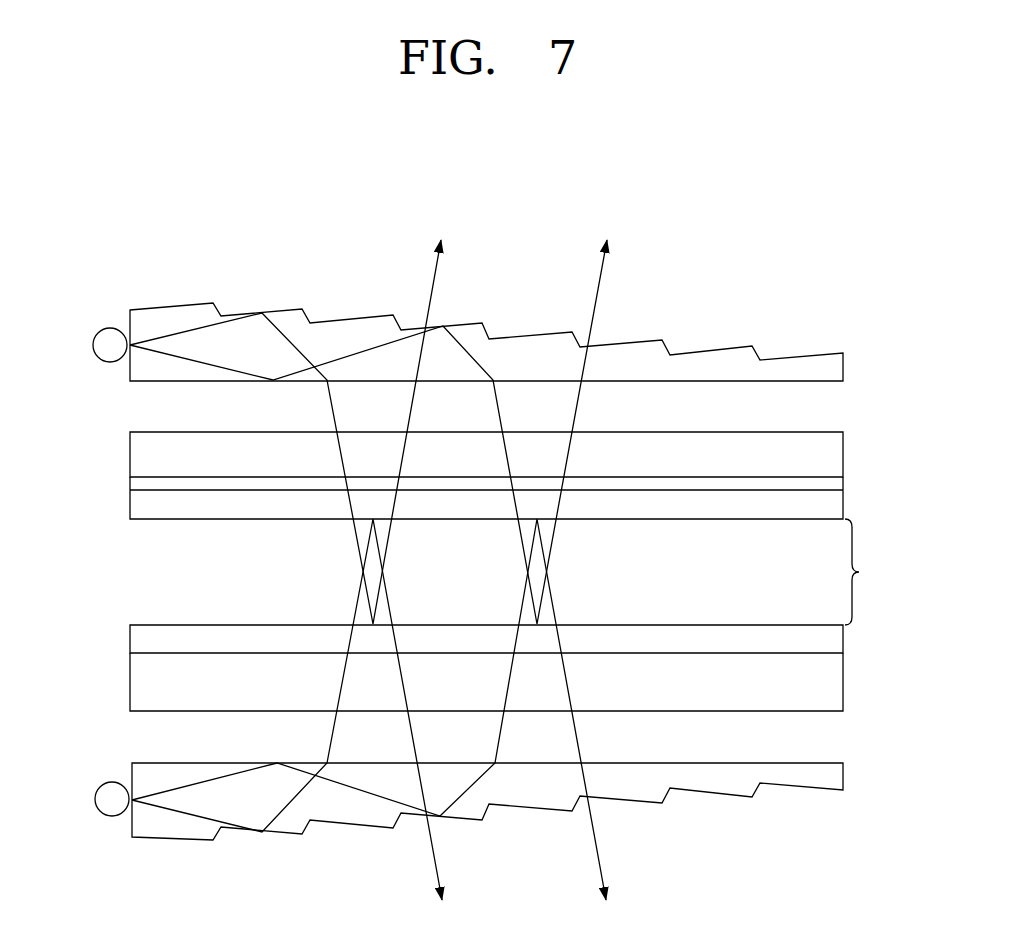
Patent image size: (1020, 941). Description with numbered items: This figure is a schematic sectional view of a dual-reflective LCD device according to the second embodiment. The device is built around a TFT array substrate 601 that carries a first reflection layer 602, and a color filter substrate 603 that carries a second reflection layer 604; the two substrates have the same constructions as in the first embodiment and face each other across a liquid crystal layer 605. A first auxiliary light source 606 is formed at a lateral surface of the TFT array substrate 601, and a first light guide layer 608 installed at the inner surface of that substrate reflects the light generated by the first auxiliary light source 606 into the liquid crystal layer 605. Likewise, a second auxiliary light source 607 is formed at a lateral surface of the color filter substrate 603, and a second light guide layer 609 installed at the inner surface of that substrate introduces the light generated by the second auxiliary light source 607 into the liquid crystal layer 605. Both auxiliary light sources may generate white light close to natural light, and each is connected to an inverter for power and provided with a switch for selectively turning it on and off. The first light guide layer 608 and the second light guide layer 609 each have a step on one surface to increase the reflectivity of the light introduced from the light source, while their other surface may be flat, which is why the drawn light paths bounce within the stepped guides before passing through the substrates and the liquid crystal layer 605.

The TFT array substrate 601 is at (837, 677).
The first reflection layer 602 is at (837, 640).
The color filter substrate 603 is at (837, 457).
The second reflection layer 604 is at (837, 485).
The liquid crystal layer 605 is at (870, 572).
The first auxiliary light source 606 is at (106, 777).
The second auxiliary light source 607 is at (99, 315).
The first light guide layer 608 is at (281, 761).
The second light guide layer 609 is at (225, 306).